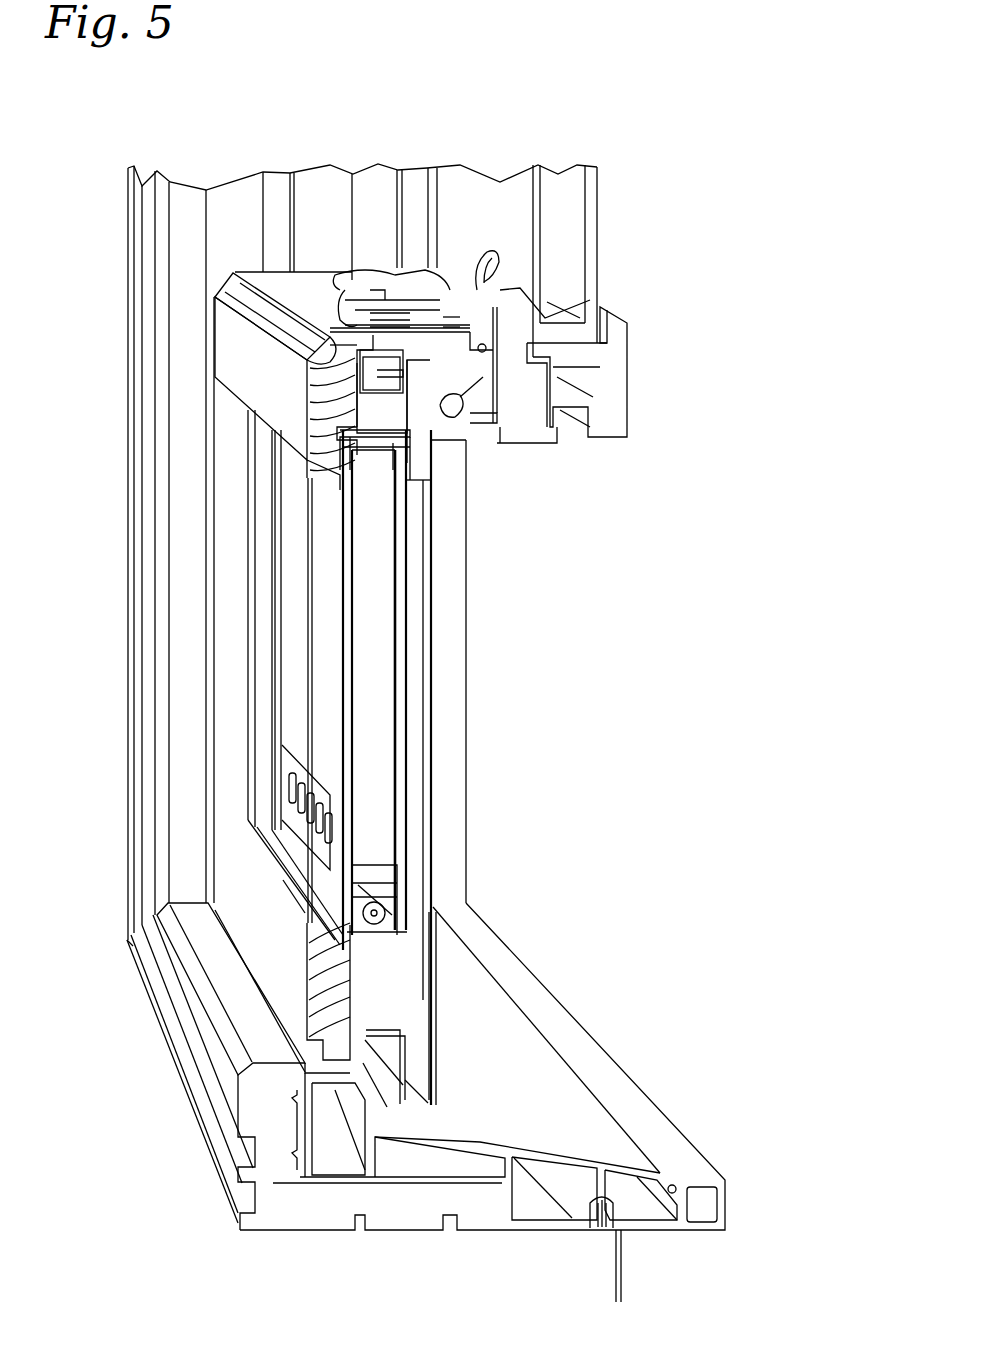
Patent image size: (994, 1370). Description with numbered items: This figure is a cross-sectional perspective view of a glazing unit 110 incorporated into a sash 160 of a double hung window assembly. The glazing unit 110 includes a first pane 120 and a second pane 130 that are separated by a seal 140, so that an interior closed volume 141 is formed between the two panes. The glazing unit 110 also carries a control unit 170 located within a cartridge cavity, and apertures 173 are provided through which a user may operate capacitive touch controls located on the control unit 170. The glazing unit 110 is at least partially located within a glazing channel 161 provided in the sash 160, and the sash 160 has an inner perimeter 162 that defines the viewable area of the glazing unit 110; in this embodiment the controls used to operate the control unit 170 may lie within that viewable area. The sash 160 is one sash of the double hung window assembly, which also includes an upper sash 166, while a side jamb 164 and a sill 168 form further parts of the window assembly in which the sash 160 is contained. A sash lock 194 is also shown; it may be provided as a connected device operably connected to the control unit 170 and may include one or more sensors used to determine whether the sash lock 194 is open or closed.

The glazing unit 110 is at (410, 630).
The first pane 120 is at (340, 645).
The second pane 130 is at (400, 700).
The seal 140 is at (372, 460).
The interior closed volume 141 is at (380, 715).
The sash 160 is at (287, 390).
The glazing channel 161 is at (435, 912).
The inner perimeter 162 is at (272, 515).
The side jamb 164 is at (187, 463).
The upper sash 166 is at (627, 367).
The sill 168 is at (508, 1047).
The control unit 170 is at (397, 890).
The apertures 173 is at (290, 793).
The sash lock 194 is at (383, 282).